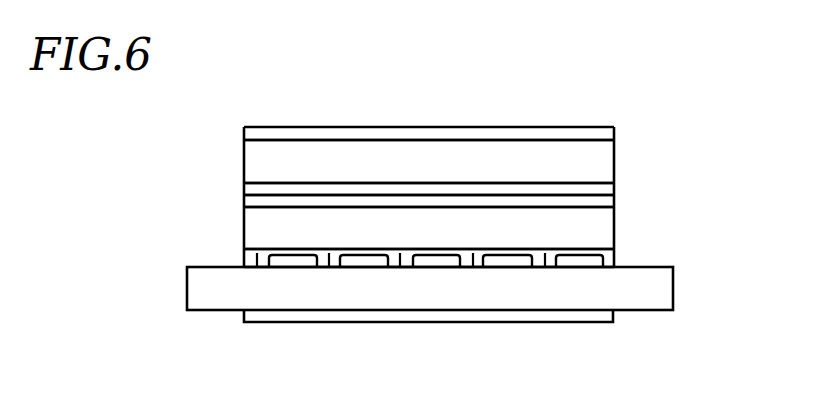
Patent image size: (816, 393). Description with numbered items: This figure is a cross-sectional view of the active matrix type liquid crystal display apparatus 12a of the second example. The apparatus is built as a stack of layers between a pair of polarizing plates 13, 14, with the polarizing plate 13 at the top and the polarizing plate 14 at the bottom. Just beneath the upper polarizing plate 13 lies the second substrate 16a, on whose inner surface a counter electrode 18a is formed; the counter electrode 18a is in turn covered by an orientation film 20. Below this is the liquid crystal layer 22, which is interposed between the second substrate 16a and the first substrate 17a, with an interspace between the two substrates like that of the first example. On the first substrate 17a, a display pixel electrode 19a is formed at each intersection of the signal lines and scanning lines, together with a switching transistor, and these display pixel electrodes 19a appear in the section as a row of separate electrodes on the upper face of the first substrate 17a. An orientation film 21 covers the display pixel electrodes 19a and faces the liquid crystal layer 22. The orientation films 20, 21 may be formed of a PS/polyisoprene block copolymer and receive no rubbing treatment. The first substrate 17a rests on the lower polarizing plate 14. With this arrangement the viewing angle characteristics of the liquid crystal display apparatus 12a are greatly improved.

The active matrix type liquid crystal display apparatus 12a is at (185, 155).
The polarizing plate 13 is at (613, 134).
The second substrate 16a is at (606, 157).
The counter electrode 18a is at (610, 188).
The orientation film 20 is at (608, 201).
The liquid crystal layer 22 is at (605, 223).
The orientation film 21 is at (611, 258).
The display pixel electrode 19a is at (578, 262).
The first substrate 17a is at (673, 287).
The polarizing plate 14 is at (612, 318).